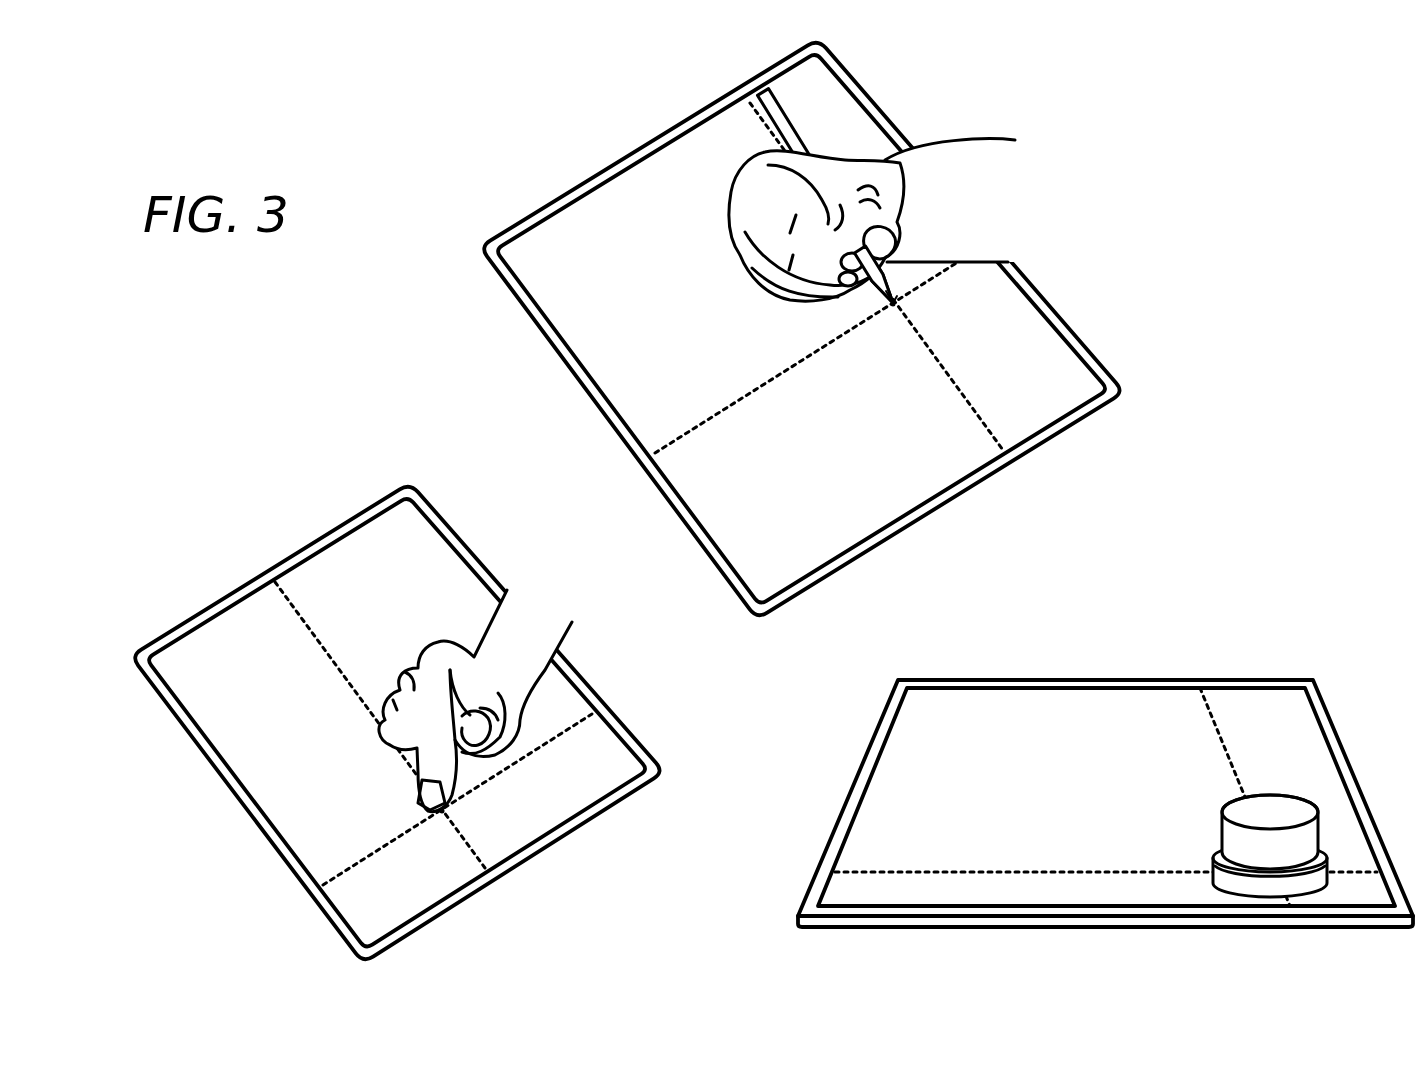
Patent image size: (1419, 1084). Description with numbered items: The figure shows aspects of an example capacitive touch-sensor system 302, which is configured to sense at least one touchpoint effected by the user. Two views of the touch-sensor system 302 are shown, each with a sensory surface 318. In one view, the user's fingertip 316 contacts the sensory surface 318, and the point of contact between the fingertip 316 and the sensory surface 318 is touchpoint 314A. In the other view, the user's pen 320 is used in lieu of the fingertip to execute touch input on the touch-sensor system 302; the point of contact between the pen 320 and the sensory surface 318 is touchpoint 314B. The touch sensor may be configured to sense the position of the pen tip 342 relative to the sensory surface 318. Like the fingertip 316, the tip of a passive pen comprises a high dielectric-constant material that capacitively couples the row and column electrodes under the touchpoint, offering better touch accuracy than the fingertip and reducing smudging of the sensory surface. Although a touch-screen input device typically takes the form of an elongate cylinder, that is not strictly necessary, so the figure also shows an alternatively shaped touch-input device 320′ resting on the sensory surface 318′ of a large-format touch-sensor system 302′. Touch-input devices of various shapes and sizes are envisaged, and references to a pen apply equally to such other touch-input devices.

The capacitive touch-sensor system 302 is at (477, 185).
The sensory surface 318 is at (695, 162).
The pen 320 is at (768, 117).
The pen tip 342 is at (900, 289).
The touchpoint 314B is at (893, 307).
The fingertip 316 is at (414, 800).
The touchpoint 314A is at (443, 814).
The large-format touch-sensor system 302′ is at (824, 735).
The sensory surface 318′ is at (972, 768).
The touch-input device 320′ is at (1270, 846).